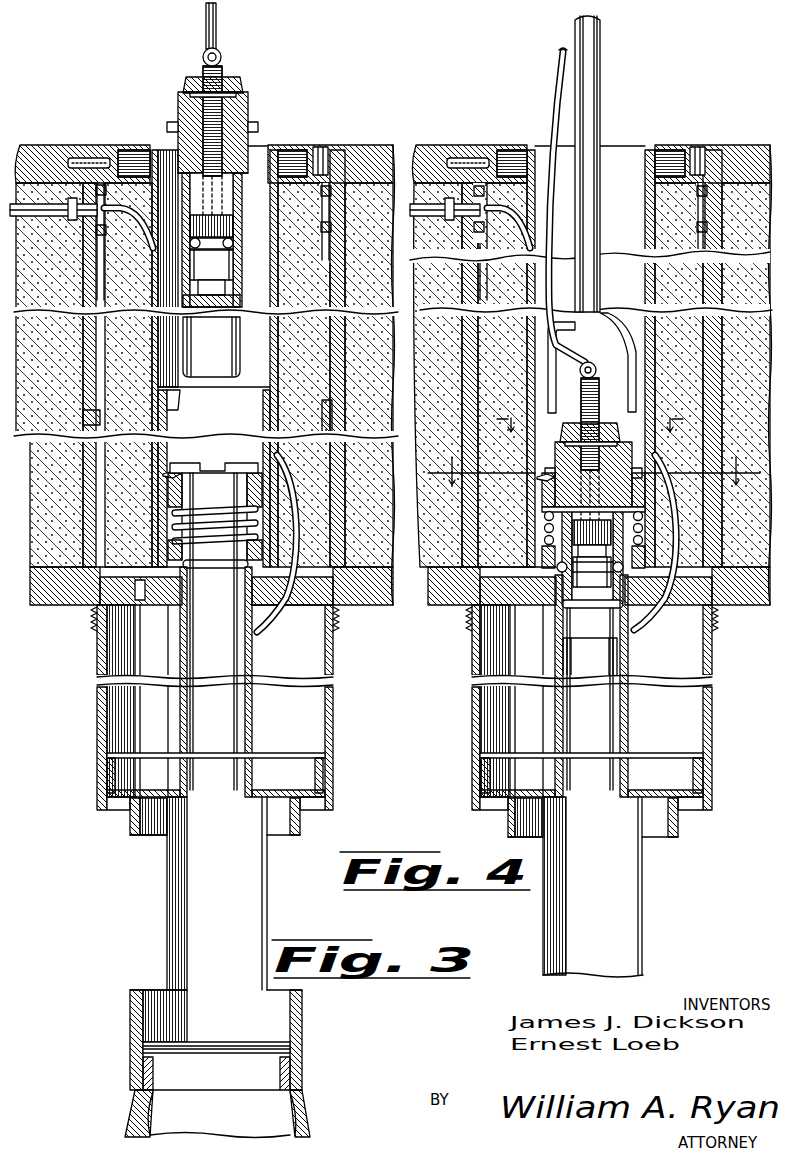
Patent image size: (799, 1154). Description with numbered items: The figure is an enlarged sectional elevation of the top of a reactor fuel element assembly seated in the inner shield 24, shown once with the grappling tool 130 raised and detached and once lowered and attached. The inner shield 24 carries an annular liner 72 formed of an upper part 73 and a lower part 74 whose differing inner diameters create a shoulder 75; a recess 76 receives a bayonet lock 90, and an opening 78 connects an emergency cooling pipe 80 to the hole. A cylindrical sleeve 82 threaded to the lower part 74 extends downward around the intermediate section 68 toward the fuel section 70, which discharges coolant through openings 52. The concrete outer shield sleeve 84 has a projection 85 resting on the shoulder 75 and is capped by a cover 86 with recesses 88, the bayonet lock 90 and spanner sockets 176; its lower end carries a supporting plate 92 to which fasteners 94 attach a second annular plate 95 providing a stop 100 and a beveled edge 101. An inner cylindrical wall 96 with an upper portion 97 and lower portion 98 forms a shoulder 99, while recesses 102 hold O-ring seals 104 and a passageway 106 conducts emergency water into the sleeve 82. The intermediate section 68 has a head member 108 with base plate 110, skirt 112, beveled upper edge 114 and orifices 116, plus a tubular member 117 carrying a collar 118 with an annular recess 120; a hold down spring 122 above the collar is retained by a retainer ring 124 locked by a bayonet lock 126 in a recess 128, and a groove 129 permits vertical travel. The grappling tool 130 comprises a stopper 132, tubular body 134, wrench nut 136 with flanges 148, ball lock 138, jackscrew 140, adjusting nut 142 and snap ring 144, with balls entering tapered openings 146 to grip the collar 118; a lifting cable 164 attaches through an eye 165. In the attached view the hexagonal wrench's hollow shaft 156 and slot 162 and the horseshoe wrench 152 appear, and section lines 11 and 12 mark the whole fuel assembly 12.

In FIG. 3, the inner shield 24 is at (40, 610).
In FIG. 4, the inner shield 24 is at (445, 612).
In FIG. 3, the openings 52 is at (165, 852).
In FIG. 3, the intermediate section 68 is at (258, 703).
In FIG. 3, the fuel section 70 is at (124, 1113).
In FIG. 3, the annular liner 72 is at (340, 342).
In FIG. 3, the upper part 73 is at (340, 363).
In FIG. 4, the upper part 73 is at (722, 268).
In FIG. 3, the lower part 74 is at (337, 598).
In FIG. 4, the lower part 74 is at (722, 372).
In FIG. 3, the shoulder 75 is at (345, 414).
In FIG. 4, the shoulder 75 is at (414, 410).
In FIG. 3, the recess 76 is at (58, 160).
In FIG. 4, the recess 76 is at (440, 162).
In FIG. 3, the opening 78 is at (97, 228).
In FIG. 4, the opening 78 is at (470, 250).
In FIG. 3, the emergency cooling system pipe 80 is at (26, 206).
In FIG. 4, the emergency cooling system pipe 80 is at (445, 216).
In FIG. 3, the cylindrical sleeve 82 is at (97, 648).
In FIG. 4, the cylindrical sleeve 82 is at (712, 653).
In FIG. 3, the outer shield sleeve 84 is at (100, 347).
In FIG. 4, the outer shield sleeve 84 is at (690, 340).
In FIG. 3, the projection 85 is at (85, 418).
In FIG. 3, the cover 86 is at (314, 139).
In FIG. 4, the cover 86 is at (690, 139).
In FIG. 3, the recesses 88 is at (136, 150).
In FIG. 4, the recesses 88 is at (521, 150).
In FIG. 3, the bayonet lock 90 is at (75, 158).
In FIG. 4, the bayonet lock 90 is at (452, 158).
In FIG. 3, the annular supporting plate 92 is at (110, 570).
In FIG. 3, the fasteners 94 is at (139, 625).
In FIG. 3, the second annular plate 95 is at (128, 625).
In FIG. 3, the cylindrical wall 96 is at (274, 150).
In FIG. 4, the cylindrical wall 96 is at (645, 205).
In FIG. 3, the upper portion 97 is at (267, 154).
In FIG. 4, the upper portion 97 is at (622, 164).
In FIG. 3, the lower portion 98 is at (332, 408).
In FIG. 3, the shoulder 99 is at (262, 392).
In FIG. 3, the stop 100 is at (143, 600).
In FIG. 3, the edge 101 is at (303, 605).
In FIG. 3, the recesses 102 is at (332, 212).
In FIG. 4, the recesses 102 is at (708, 212).
In FIG. 3, the O-ring seals 104 is at (332, 196).
In FIG. 4, the O-ring seals 104 is at (708, 196).
In FIG. 3, the passageway 106 is at (125, 222).
In FIG. 4, the passageway 106 is at (505, 262).
In FIG. 3, the cylindrical head member 108 is at (130, 805).
In FIG. 4, the cylindrical head member 108 is at (500, 805).
In FIG. 3, the annular base plate 110 is at (305, 810).
In FIG. 4, the annular base plate 110 is at (686, 810).
In FIG. 3, the cylindrical vertical skirt 112 is at (325, 770).
In FIG. 4, the cylindrical vertical skirt 112 is at (703, 775).
In FIG. 3, the upper edge 114 is at (305, 756).
In FIG. 4, the upper edge 114 is at (680, 758).
In FIG. 3, the orifices 116 is at (272, 798).
In FIG. 4, the orifices 116 is at (668, 795).
In FIG. 3, the tubular member 117 is at (252, 722).
In FIG. 4, the tubular member 117 is at (628, 722).
In FIG. 3, the collar 118 is at (248, 551).
In FIG. 4, the collar 118 is at (548, 566).
In FIG. 3, the annular recess 120 is at (210, 569).
In FIG. 4, the annular recess 120 is at (640, 562).
In FIG. 3, the hold down spring 122 is at (200, 512).
In FIG. 4, the hold down spring 122 is at (545, 547).
In FIG. 3, the retainer ring 124 is at (194, 470).
In FIG. 4, the retainer ring 124 is at (542, 530).
In FIG. 3, the bayonet lock 126 is at (180, 490).
In FIG. 4, the bayonet lock 126 is at (545, 497).
In FIG. 3, the recess 128 is at (165, 480).
In FIG. 3, the groove 129 is at (182, 404).
In FIG. 3, the grappling tool 130 is at (245, 68).
In FIG. 3, the stopper 132 is at (233, 346).
In FIG. 4, the stopper 132 is at (617, 669).
In FIG. 3, the tubular body 134 is at (233, 246).
In FIG. 4, the tubular body 134 is at (565, 622).
In FIG. 3, the wrench nut 136 is at (178, 140).
In FIG. 4, the wrench nut 136 is at (632, 445).
In FIG. 3, the ball lock 138 is at (228, 266).
In FIG. 4, the ball lock 138 is at (577, 600).
In FIG. 3, the jackscrew 140 is at (222, 70).
In FIG. 4, the jackscrew 140 is at (580, 383).
In FIG. 3, the adjusting nut 142 is at (192, 93).
In FIG. 4, the adjusting nut 142 is at (565, 432).
In FIG. 3, the retainer snap ring 144 is at (240, 82).
In FIG. 4, the retainer snap ring 144 is at (560, 458).
In FIG. 3, the tapered openings 146 is at (240, 232).
In FIG. 4, the tapered openings 146 is at (562, 552).
In FIG. 3, the flanges 148 is at (172, 122).
In FIG. 4, the flanges 148 is at (642, 467).
In FIG. 4, the horseshoe wrench 152 is at (614, 352).
In FIG. 4, the hollow shaft 156 is at (600, 70).
In FIG. 4, the slot 162 is at (547, 339).
In FIG. 3, the lifting cable 164 is at (217, 23).
In FIG. 4, the lifting cable 164 is at (558, 66).
In FIG. 3, the eye 165 is at (221, 55).
In FIG. 4, the eye 165 is at (580, 370).
In FIG. 3, the sockets 176 is at (322, 150).
In FIG. 4, the sockets 176 is at (700, 150).
In FIG. 4, the section line 11- 11 is at (594, 417).
In FIG. 4, the fuel assembly 12 is at (594, 469).